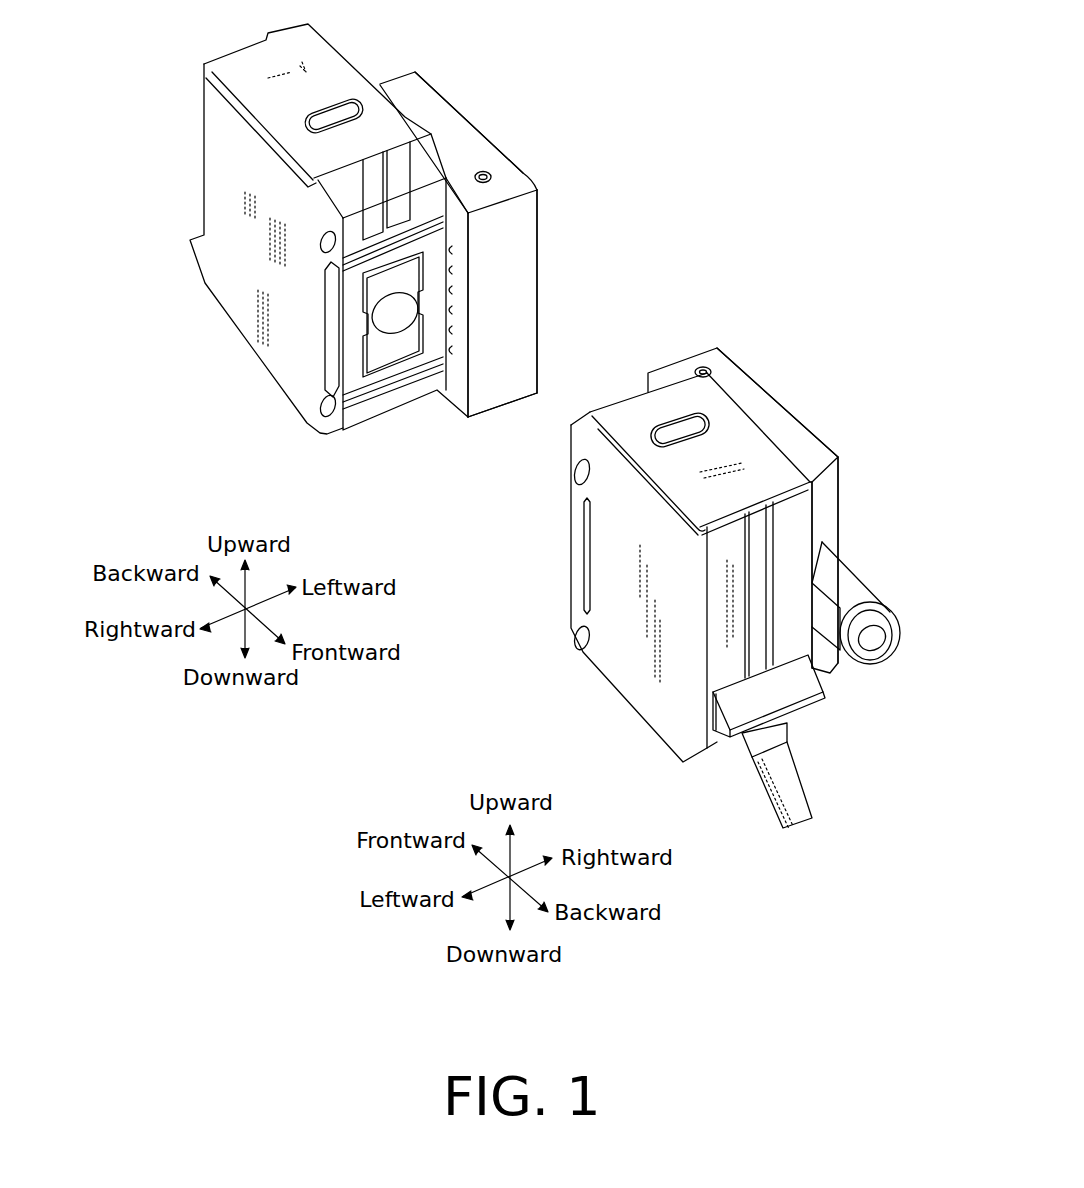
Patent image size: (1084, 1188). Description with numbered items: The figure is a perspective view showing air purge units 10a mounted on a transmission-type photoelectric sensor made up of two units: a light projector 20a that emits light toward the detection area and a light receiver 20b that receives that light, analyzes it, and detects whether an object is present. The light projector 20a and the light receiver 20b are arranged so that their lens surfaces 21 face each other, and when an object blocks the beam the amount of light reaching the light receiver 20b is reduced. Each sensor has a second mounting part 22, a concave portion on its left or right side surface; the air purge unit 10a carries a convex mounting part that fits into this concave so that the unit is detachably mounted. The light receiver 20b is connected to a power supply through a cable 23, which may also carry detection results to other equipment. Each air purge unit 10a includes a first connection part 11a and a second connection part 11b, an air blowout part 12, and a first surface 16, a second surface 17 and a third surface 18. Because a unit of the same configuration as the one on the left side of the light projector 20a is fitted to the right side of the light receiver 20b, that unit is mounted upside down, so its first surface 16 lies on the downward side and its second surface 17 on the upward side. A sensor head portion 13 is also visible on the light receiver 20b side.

The air purge unit 10a is at (462, 115).
The first connection part 11a is at (493, 175).
The second connection part 11b is at (706, 366).
The air blowout part 12 is at (450, 354).
The sensor head 13 is at (849, 584).
The first surface 16 is at (480, 148).
The second surface 17 is at (503, 411).
The third surface 18 is at (527, 251).
The light projector 20a is at (222, 152).
The light receiver 20b is at (637, 690).
The lens surface 21 is at (393, 322).
The second mounting part 22 is at (322, 242).
The cable 23 is at (793, 797).